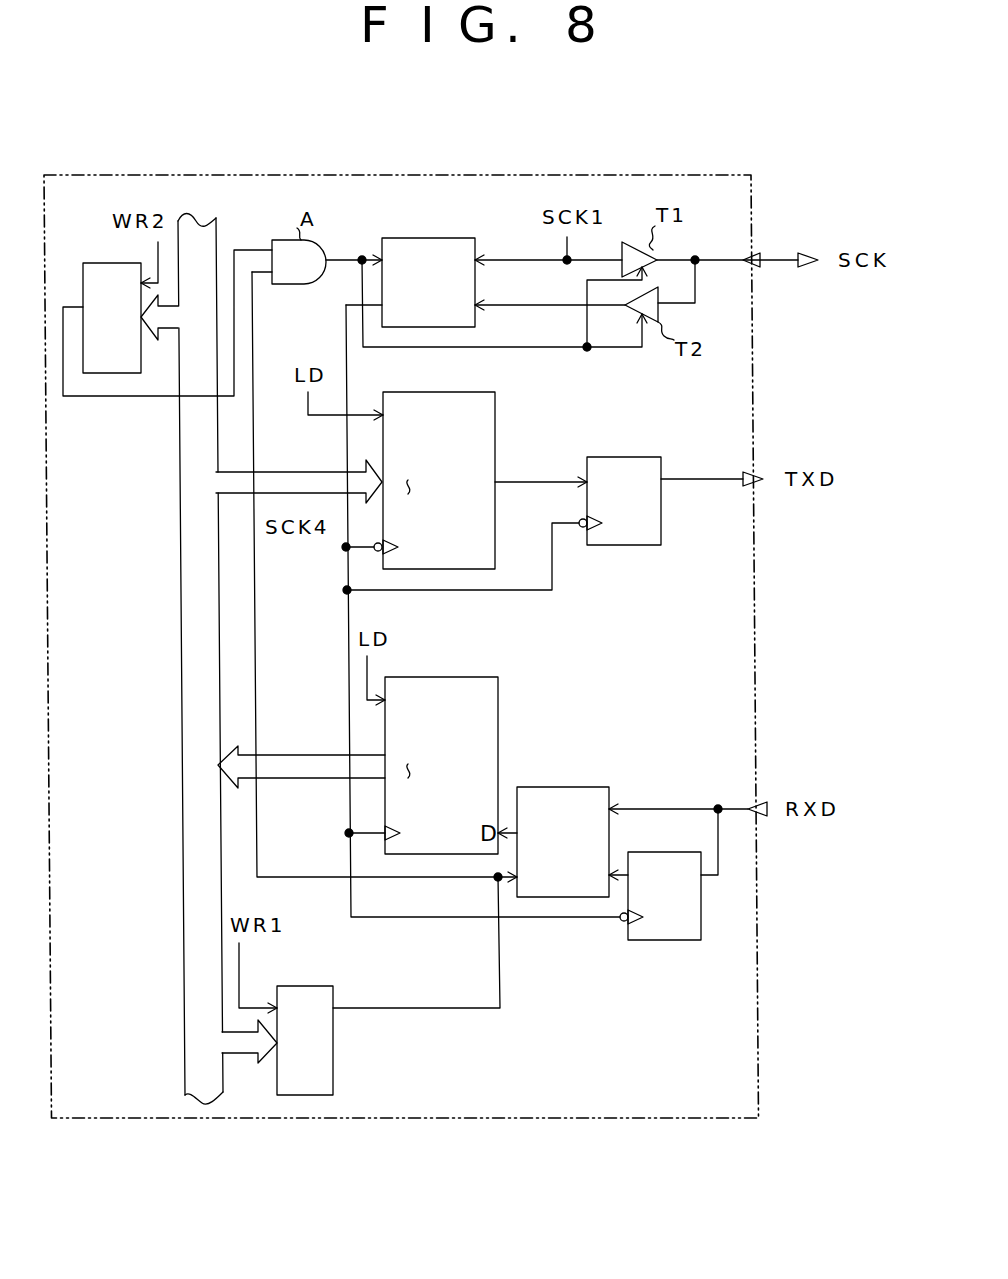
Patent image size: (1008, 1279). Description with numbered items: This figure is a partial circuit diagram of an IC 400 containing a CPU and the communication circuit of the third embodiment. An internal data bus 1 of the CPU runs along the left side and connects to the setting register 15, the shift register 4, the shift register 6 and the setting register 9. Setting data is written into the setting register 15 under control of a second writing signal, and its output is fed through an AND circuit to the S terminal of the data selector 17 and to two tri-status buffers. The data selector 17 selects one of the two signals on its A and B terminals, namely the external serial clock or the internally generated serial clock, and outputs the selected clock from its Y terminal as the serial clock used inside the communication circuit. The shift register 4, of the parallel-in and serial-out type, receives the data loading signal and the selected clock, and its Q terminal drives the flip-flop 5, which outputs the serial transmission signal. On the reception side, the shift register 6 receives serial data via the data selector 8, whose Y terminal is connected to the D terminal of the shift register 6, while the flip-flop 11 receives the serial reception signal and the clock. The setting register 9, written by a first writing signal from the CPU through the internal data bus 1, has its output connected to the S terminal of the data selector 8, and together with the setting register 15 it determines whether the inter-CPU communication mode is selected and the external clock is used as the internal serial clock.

The IC 400 is at (583, 174).
The internal data bus 1 is at (196, 723).
The setting register 15 is at (99, 263).
The data selector 17 is at (446, 238).
The shift register 4 is at (466, 392).
The flip-flop 5 is at (626, 440).
The shift register 6 is at (471, 677).
The data selector 8 is at (578, 787).
The flip-flop 11 is at (666, 834).
The setting register 9 is at (334, 1074).